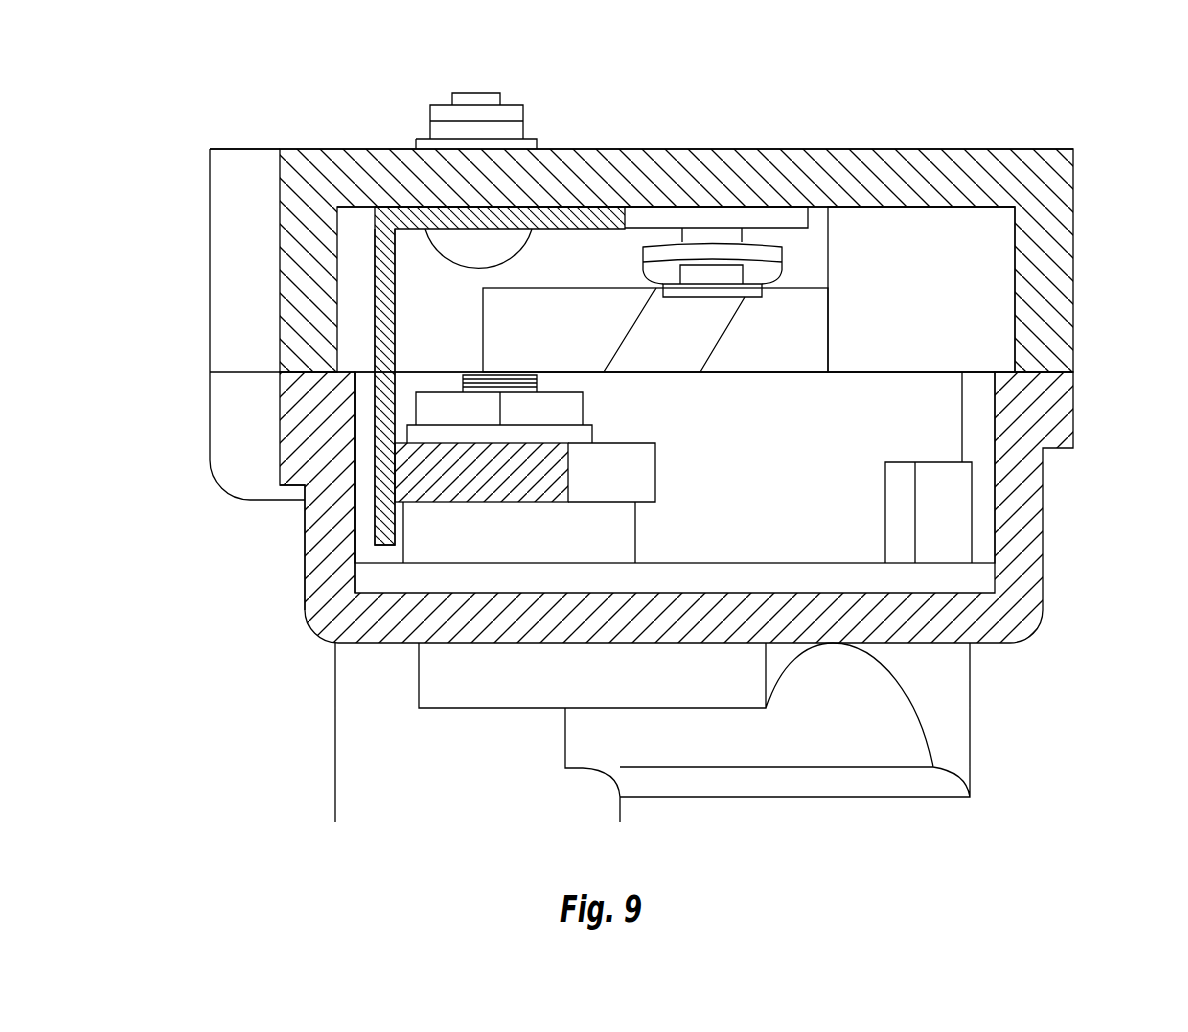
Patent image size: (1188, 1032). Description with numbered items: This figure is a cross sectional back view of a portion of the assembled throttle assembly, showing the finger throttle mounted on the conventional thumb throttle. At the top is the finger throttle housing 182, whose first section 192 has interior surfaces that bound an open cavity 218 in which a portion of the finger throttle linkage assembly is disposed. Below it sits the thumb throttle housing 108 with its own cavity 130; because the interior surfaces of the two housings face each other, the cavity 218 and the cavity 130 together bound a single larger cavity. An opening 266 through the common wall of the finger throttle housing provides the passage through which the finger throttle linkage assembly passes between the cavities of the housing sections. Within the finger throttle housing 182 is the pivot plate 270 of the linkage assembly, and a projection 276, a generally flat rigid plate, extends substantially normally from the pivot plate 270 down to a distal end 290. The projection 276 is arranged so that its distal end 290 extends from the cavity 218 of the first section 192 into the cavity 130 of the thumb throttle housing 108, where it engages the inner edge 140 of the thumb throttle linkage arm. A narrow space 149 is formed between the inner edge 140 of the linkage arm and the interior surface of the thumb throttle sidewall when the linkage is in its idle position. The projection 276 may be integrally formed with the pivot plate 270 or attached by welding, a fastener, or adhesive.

The housing 108 is at (1032, 559).
The cavity 130 is at (837, 438).
The inner edge 140 is at (400, 475).
The narrow space 149 is at (365, 435).
The housing 182 is at (1033, 149).
The first section 192 is at (1063, 187).
The cavity 218 is at (982, 305).
The opening 266 is at (805, 310).
The pivot plate 270 is at (584, 215).
The projection 276 is at (385, 340).
The distal end 290 is at (363, 523).